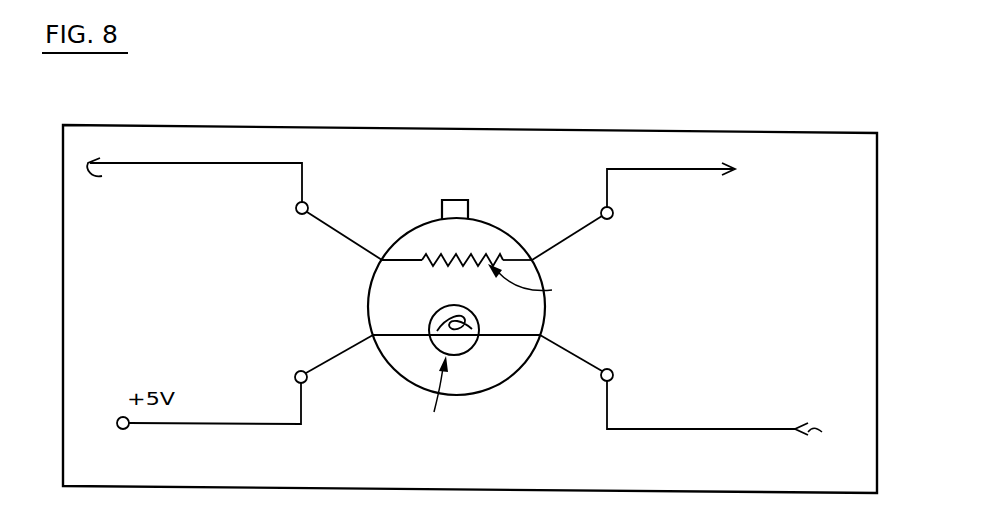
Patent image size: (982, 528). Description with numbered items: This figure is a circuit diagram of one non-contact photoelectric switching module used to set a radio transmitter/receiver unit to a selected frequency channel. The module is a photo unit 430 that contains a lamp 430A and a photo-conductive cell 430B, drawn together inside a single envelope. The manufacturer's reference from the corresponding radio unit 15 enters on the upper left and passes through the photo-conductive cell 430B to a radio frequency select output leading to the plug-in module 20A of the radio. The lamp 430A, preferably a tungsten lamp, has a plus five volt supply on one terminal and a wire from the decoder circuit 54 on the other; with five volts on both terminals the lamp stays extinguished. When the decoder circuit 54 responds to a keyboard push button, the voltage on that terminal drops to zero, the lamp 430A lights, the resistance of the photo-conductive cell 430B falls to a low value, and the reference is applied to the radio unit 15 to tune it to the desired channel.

The radio unit 15 is at (229, 209).
The plug-in module 20A is at (702, 199).
The decoder circuit 54 is at (706, 408).
The photo unit 430 is at (368, 304).
The lamp 430A is at (465, 346).
The photo-conductive cell 430B is at (445, 253).